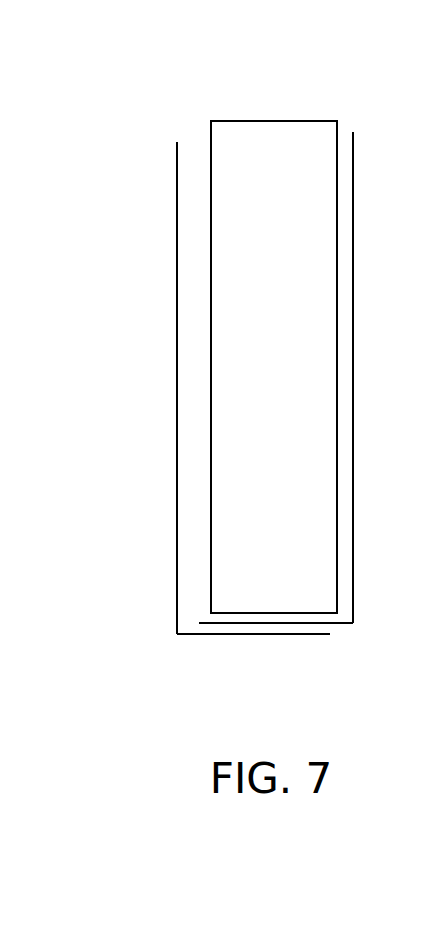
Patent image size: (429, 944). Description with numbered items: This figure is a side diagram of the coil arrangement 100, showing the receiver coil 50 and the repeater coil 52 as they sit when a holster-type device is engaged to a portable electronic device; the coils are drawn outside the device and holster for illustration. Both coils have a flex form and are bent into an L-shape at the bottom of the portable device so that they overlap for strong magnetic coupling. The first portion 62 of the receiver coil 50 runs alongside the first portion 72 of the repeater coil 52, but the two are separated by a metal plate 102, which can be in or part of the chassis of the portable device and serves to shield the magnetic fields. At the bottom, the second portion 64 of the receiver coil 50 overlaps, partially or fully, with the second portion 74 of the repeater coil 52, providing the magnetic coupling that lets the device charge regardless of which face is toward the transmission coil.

The coil arrangement 100 is at (287, 33).
The metal plate 102 is at (273, 120).
The receiver coil 50 is at (354, 256).
The repeater coil 52 is at (176, 267).
The first portion of the receiver coil 62 is at (354, 378).
The second portion of the receiver coil 64 is at (275, 624).
The first portion of the repeater coil 72 is at (176, 388).
The second portion of the repeater coil 74 is at (217, 635).